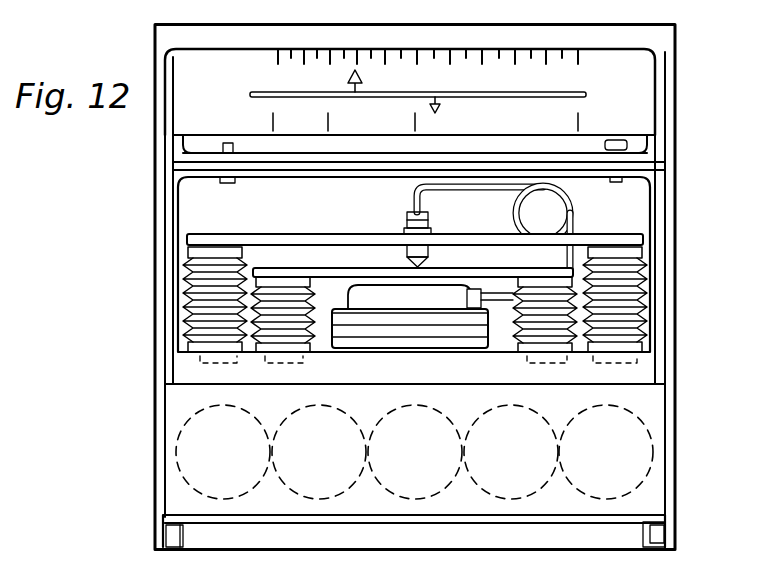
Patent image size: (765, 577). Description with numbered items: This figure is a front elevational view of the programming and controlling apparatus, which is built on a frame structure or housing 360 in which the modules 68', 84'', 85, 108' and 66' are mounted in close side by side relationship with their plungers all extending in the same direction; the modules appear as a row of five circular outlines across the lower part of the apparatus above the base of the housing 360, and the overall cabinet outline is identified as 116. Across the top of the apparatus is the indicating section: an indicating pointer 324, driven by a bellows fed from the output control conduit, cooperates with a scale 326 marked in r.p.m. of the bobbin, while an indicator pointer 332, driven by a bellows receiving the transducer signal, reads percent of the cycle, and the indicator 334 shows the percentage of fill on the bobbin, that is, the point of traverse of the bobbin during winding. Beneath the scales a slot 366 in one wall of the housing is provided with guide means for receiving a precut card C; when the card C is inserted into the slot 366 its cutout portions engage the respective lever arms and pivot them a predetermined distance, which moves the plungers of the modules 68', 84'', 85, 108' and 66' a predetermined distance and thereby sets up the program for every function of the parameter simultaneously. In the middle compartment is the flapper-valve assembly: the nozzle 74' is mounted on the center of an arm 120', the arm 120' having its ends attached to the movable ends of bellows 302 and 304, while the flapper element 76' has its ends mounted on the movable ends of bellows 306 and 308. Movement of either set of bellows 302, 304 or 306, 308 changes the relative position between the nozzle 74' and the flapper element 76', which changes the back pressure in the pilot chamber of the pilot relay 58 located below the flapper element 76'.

The cabinet housing 116 is at (684, 513).
The scale 326 is at (292, 48).
The indicating pointer 324 is at (359, 73).
The indicator pointer 332 is at (440, 111).
The indicator 334 is at (510, 138).
The slot 366 is at (292, 162).
The precut card C is at (347, 178).
The arm 120' is at (493, 228).
The flapper element 76' is at (413, 265).
The nozzle 74' is at (437, 241).
The bellows 302 is at (188, 290).
The bellows 304 is at (648, 300).
The bellows 306 is at (318, 340).
The bellows 308 is at (515, 352).
The pilot relay 58 is at (434, 342).
The module 68' is at (227, 458).
The module 84'' is at (323, 458).
The module 85 is at (461, 489).
The module 108' is at (514, 459).
The module 66' is at (606, 459).
The frame structure or housing 360 is at (533, 552).